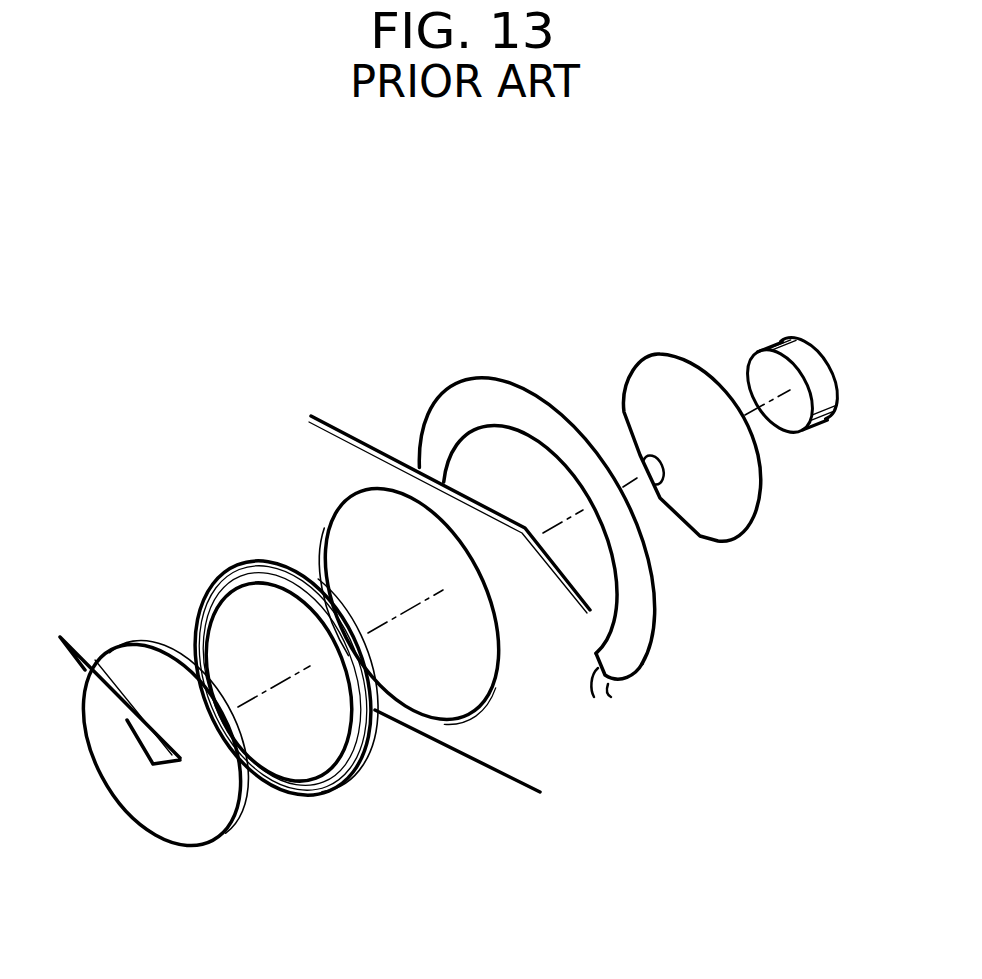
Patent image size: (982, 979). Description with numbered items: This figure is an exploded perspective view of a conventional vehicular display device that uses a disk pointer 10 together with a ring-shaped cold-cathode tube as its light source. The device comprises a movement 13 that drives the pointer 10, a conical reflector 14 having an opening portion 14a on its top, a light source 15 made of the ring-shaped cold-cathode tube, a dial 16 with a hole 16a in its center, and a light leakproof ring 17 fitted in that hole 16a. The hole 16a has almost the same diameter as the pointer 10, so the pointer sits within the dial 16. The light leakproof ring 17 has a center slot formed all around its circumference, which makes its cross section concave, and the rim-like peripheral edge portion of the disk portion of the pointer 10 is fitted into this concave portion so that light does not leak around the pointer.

The disk pointer 10 is at (118, 665).
The movement 13 is at (830, 414).
The conical reflector 14 is at (727, 527).
The opening portion 14a is at (655, 492).
The light source 15 is at (542, 427).
The dial 16 is at (347, 432).
The hole 16a is at (462, 719).
The light leakproof ring 17 is at (227, 568).